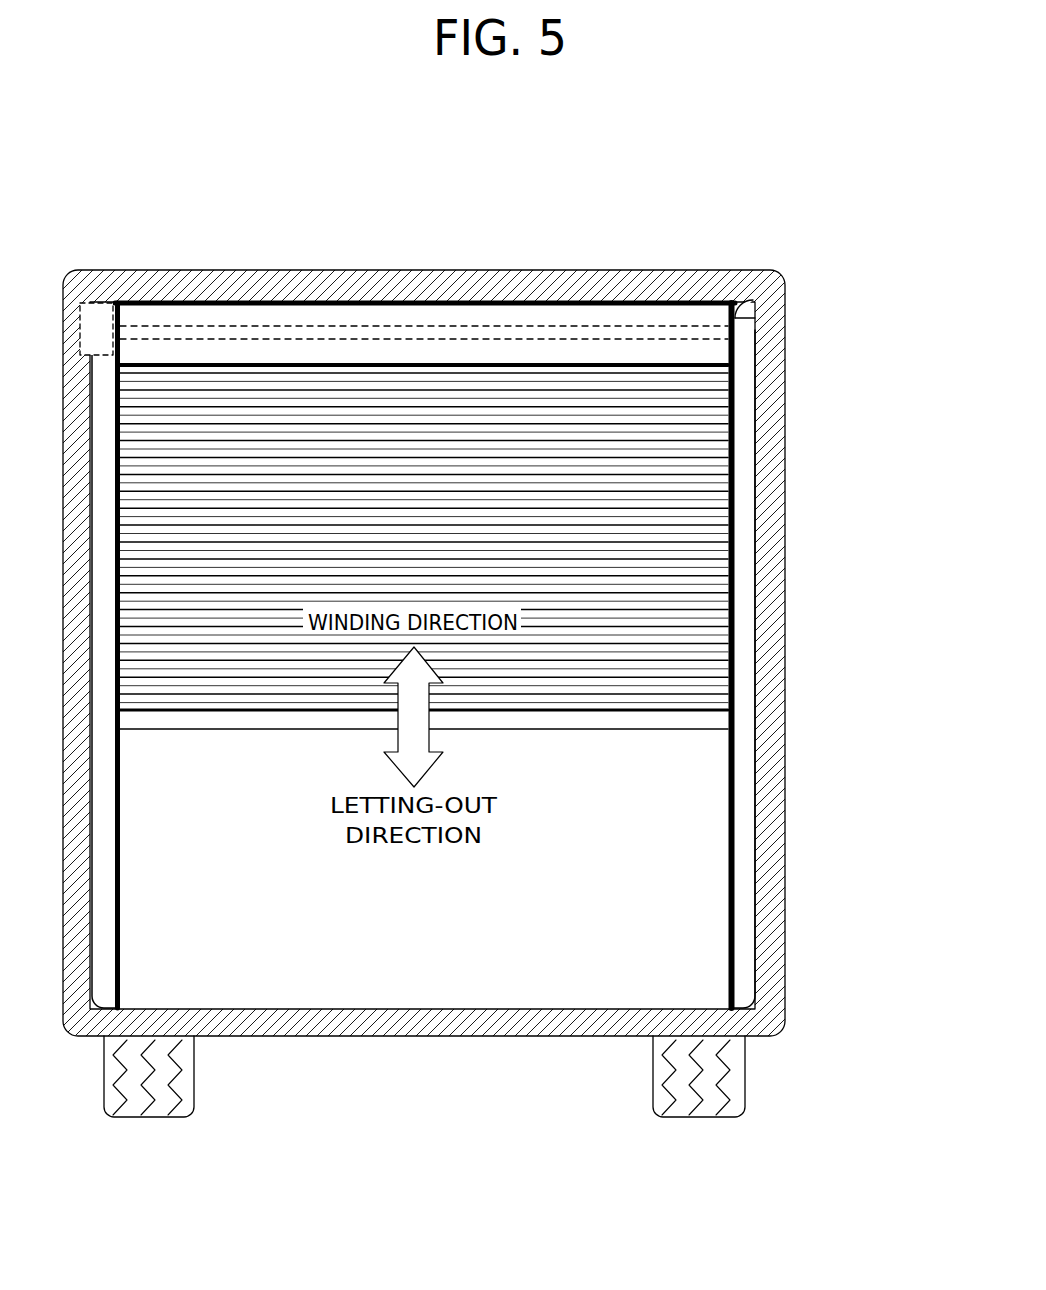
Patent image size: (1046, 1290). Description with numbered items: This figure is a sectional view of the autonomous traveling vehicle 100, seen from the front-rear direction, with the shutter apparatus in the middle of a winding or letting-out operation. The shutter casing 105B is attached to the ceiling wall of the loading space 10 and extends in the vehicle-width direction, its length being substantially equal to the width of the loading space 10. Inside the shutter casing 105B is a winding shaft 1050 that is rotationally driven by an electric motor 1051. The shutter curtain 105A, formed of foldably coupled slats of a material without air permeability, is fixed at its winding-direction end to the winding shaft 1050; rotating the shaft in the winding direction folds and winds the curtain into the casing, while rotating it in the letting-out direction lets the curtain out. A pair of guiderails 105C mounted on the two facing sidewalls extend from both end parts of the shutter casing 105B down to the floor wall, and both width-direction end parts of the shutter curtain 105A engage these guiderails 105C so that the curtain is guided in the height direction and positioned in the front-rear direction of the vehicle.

The autonomous traveling vehicle 100 is at (648, 255).
The loading space 10 is at (452, 947).
The shutter curtain 105A is at (668, 642).
The shutter casing 105B is at (315, 312).
The guiderails 105C is at (745, 858).
The winding shaft 1050 is at (527, 327).
The electric motor 1051 is at (100, 325).